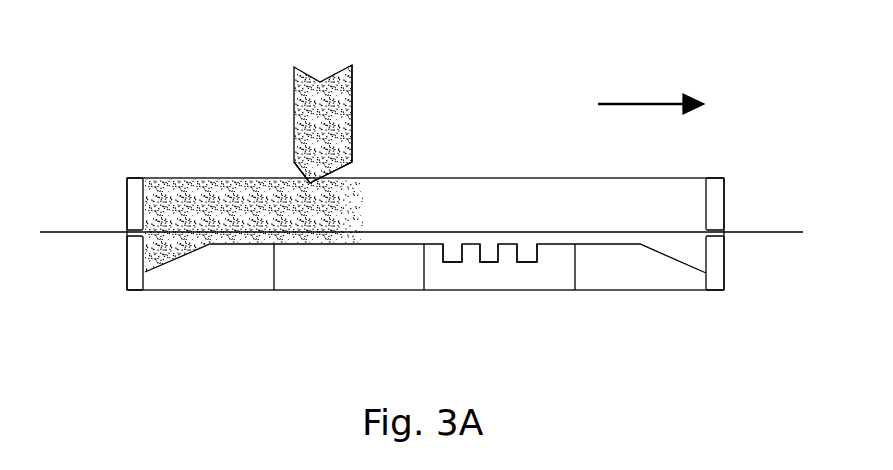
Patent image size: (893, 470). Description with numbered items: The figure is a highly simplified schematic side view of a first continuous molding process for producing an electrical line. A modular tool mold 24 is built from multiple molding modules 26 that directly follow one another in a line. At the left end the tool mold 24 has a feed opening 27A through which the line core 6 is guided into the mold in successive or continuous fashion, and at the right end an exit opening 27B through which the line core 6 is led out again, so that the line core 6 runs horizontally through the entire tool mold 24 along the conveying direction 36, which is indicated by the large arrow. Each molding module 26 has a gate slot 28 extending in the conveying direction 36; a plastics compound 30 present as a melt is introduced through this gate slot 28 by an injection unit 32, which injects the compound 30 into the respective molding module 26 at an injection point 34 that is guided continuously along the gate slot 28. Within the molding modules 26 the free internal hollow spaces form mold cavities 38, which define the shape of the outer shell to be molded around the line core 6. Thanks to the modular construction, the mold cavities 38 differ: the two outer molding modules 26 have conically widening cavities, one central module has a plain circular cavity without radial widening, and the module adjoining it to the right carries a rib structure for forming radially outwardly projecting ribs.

The line core 6 is at (98, 234).
The tool mold 24 is at (463, 72).
The molding modules 26 is at (222, 292).
The feed opening 27A is at (114, 212).
The exit opening 27B is at (737, 208).
The gate slot 28 is at (197, 178).
The plastics compound 30 is at (320, 82).
The injection unit 32 is at (352, 100).
The injection point 34 is at (308, 182).
The conveying direction 36 is at (642, 103).
The mold cavities 38 is at (460, 243).